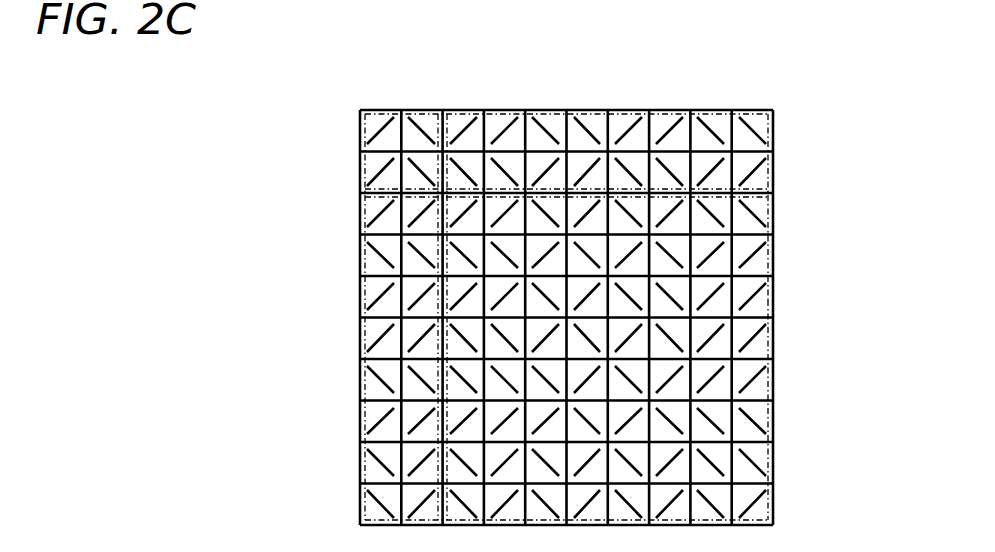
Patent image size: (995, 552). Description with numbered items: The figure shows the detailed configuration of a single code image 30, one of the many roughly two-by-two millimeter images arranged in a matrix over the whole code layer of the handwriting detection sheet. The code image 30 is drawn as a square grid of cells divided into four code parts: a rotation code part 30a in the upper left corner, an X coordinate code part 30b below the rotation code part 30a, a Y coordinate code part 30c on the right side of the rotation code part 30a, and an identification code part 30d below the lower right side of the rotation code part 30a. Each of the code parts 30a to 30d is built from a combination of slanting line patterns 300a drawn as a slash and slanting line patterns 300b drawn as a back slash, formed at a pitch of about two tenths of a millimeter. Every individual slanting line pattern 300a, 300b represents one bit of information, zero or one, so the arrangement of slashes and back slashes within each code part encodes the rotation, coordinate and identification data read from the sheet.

The code image 30 is at (637, 110).
The rotation code part 30a is at (358, 130).
The X coordinate code part 30b is at (358, 247).
The Y coordinate code part 30c is at (775, 135).
The identification code part 30d is at (775, 292).
The slanting line pattern of slash 300a is at (375, 335).
The slanting line pattern of back slash 300b is at (375, 465).